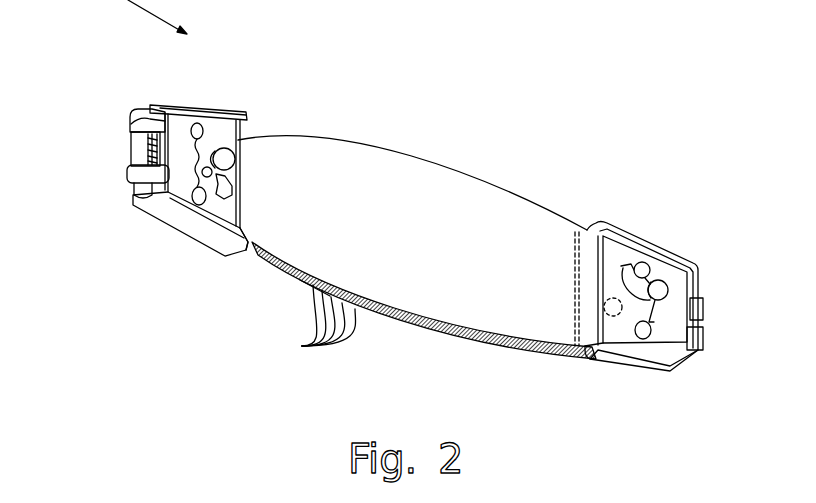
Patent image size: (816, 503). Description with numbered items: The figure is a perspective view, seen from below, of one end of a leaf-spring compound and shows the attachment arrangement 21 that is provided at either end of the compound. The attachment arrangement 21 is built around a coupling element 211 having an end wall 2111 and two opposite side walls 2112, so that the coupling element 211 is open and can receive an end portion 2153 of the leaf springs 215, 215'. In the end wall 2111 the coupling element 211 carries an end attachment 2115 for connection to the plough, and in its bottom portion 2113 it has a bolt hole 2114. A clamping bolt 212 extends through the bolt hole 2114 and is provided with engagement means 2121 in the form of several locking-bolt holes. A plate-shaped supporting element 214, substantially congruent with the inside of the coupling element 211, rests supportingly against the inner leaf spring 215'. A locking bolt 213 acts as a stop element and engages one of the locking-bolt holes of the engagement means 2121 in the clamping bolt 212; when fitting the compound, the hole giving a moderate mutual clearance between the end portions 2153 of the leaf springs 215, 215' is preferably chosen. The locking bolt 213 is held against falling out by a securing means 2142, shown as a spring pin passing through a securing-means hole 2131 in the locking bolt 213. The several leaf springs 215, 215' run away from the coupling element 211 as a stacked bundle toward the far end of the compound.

The attachment arrangement 21 is at (193, 262).
The coupling element 211 is at (130, 220).
The end wall 2111 is at (132, 193).
The side walls 2112 is at (183, 232).
The bottom portion 2113 is at (574, 275).
The bolt hole 2114 is at (597, 327).
The end attachment 2115 is at (132, 122).
The clamping bolt 212 is at (235, 162).
The engagement means 2121 is at (211, 181).
The locking bolt 213 is at (233, 188).
The securing-means hole 2131 is at (132, 150).
The supporting element 214 is at (228, 133).
The securing means 2142 is at (237, 145).
The leaf spring 215 is at (424, 301).
The inner leaf spring 215' is at (281, 305).
The end portion 2153 is at (250, 227).